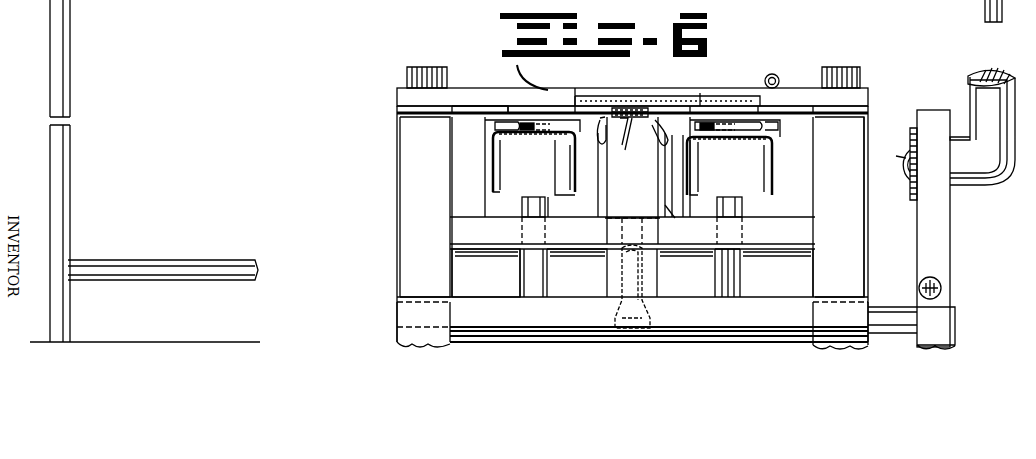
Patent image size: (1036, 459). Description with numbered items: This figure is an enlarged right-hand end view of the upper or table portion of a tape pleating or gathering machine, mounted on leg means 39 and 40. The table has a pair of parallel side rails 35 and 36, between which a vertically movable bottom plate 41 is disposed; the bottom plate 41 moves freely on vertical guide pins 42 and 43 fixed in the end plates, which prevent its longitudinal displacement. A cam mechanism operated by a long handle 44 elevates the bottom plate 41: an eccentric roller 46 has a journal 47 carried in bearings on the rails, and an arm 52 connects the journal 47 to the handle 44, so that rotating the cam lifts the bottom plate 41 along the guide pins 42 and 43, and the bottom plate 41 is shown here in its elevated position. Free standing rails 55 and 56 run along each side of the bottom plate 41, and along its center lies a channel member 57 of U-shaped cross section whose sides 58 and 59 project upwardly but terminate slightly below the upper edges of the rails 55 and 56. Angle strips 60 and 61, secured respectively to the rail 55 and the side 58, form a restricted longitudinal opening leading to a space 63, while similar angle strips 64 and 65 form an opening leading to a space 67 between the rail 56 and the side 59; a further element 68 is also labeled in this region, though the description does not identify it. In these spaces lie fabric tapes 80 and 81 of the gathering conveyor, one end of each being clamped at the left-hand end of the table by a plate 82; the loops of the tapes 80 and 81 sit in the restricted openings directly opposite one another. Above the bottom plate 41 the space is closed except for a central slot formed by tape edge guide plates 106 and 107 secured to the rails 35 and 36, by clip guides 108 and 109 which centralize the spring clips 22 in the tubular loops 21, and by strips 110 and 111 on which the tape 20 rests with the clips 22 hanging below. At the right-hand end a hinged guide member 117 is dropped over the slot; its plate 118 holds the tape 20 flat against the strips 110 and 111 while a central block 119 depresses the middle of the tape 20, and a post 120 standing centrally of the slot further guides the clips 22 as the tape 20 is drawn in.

The tape 20 is at (675, 99).
The tubular loops 21 is at (640, 180).
The spring clip 22 is at (712, 133).
The side rail 35 is at (436, 190).
The side rail 36 is at (856, 207).
The leg means 39 is at (72, 78).
The leg means 40 is at (112, 265).
The bottom plate 41 is at (478, 243).
The vertical guide pin 42 is at (530, 268).
The vertical guide pin 43 is at (738, 276).
The handle 44 is at (972, 90).
The eccentric roller 46 is at (700, 278).
The journal 47 is at (896, 312).
The arm 52 is at (950, 216).
The free standing rail 55 is at (806, 164).
The free standing rail 56 is at (482, 152).
The channel member 57 is at (582, 200).
The channel side 58 is at (680, 170).
The channel side 59 is at (582, 164).
The angle strip 60 is at (772, 178).
The angle strip 61 is at (685, 180).
The space 63 is at (774, 204).
The angle strip 64 is at (572, 176).
The angle strip 65 is at (496, 178).
The space 67 is at (516, 204).
The slide 68 is at (525, 132).
The fabric tape 80 is at (770, 152).
The fabric tape 81 is at (498, 150).
The plate 82 is at (724, 136).
The tape edge guide plate 106 is at (495, 97).
The tape edge guide plate 107 is at (750, 90).
The clip guide 108 is at (608, 97).
The clip guide 109 is at (700, 93).
The strip 110 is at (538, 107).
The strip 111 is at (726, 98).
The guide member 117 is at (800, 88).
The plate 118 is at (616, 97).
The block 119 is at (627, 139).
The post 120 is at (665, 198).